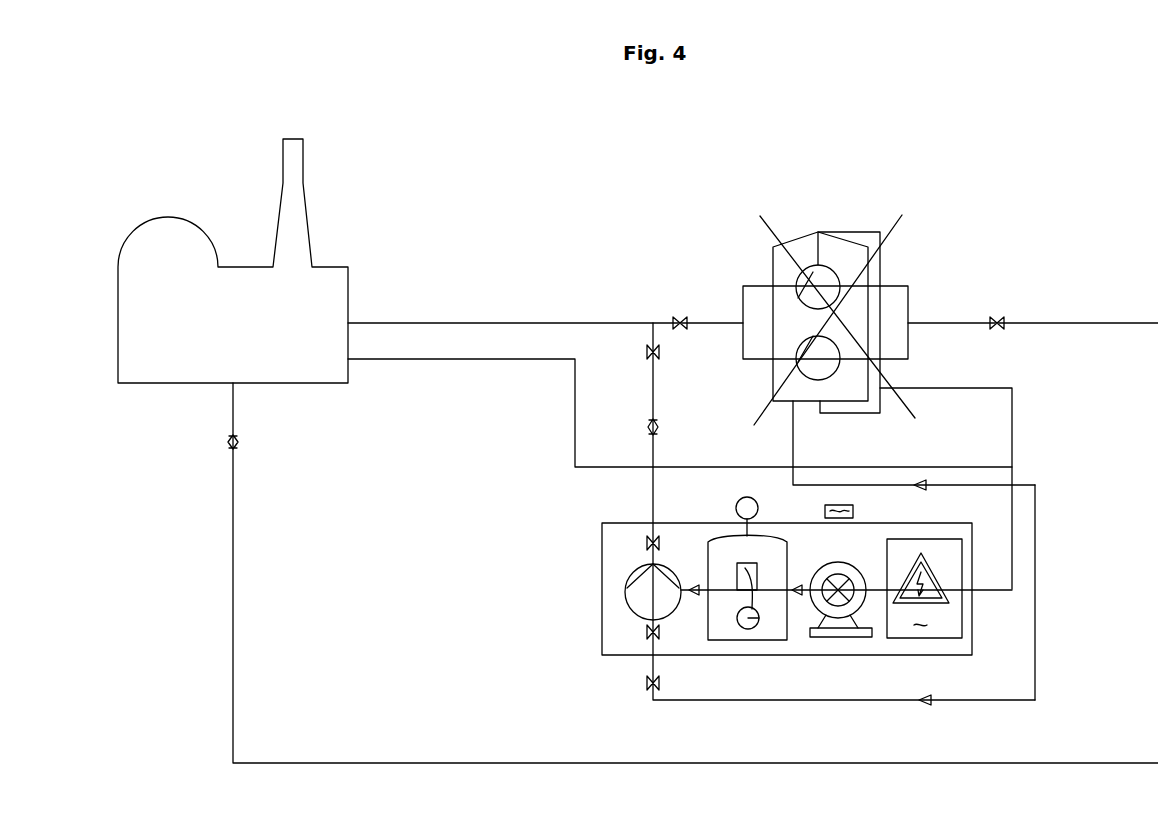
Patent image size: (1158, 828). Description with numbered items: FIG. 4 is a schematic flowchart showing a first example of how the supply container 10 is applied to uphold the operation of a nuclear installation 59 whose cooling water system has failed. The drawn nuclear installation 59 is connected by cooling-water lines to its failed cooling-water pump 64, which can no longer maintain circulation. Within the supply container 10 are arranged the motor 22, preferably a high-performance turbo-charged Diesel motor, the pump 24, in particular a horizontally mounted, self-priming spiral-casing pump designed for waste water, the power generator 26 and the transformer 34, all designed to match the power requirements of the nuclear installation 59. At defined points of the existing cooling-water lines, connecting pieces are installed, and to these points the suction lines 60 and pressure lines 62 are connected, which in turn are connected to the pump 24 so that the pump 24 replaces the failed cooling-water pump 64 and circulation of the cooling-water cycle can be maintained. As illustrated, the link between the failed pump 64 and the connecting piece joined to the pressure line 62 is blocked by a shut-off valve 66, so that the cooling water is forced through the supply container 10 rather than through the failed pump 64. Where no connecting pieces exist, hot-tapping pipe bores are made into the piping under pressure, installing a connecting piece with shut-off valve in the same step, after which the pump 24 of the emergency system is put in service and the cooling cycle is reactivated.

The supply container 10 is at (972, 612).
The motor 22 is at (769, 645).
The pump 24 is at (649, 612).
The power generator 26 is at (854, 645).
The transformer 34 is at (947, 630).
The nuclear installation 59 is at (217, 365).
The suction lines 60 is at (1035, 503).
The pressure lines 62 is at (654, 530).
The failed cooling-water pump 64 is at (827, 243).
The shut-off valve 66 is at (680, 316).